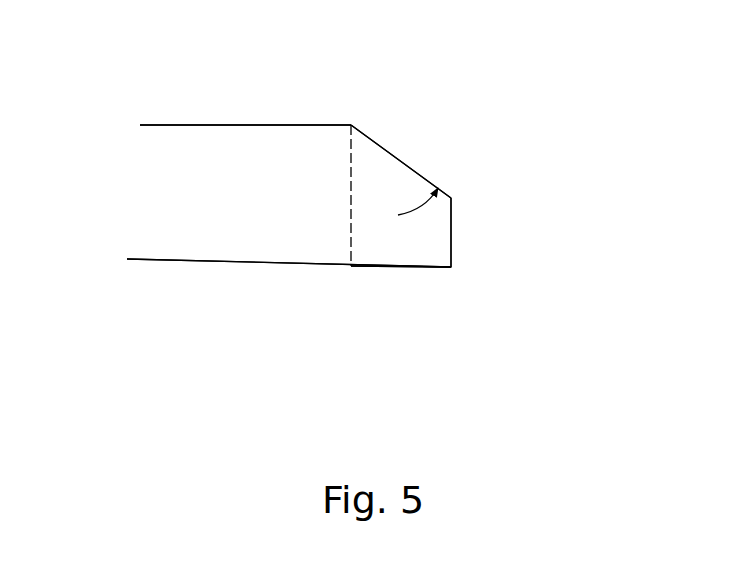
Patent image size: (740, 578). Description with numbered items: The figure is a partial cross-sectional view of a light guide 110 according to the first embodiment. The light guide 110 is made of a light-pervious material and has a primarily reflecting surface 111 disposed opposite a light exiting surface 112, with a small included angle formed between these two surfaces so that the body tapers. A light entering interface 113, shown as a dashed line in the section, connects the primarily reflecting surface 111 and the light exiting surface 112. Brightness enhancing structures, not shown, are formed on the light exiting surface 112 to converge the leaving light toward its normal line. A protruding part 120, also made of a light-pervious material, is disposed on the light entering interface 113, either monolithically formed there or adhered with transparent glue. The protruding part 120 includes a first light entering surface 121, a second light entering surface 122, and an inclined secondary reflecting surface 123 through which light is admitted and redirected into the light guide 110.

The light guide 110 is at (228, 150).
The primarily reflecting surface 111 is at (145, 259).
The light exiting surface 112 is at (180, 123).
The light entering interface 113 is at (350, 175).
The protruding part 120 is at (383, 180).
The first light entering surface 121 is at (451, 232).
The second light entering surface 122 is at (402, 267).
The secondary reflecting surface 123 is at (407, 163).